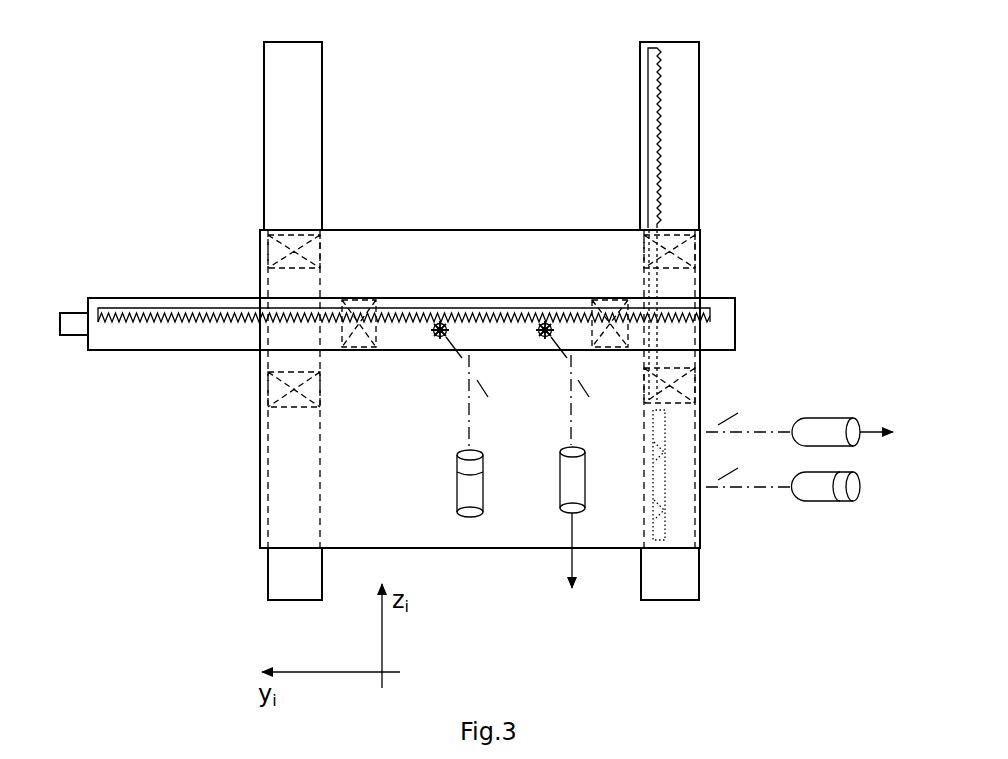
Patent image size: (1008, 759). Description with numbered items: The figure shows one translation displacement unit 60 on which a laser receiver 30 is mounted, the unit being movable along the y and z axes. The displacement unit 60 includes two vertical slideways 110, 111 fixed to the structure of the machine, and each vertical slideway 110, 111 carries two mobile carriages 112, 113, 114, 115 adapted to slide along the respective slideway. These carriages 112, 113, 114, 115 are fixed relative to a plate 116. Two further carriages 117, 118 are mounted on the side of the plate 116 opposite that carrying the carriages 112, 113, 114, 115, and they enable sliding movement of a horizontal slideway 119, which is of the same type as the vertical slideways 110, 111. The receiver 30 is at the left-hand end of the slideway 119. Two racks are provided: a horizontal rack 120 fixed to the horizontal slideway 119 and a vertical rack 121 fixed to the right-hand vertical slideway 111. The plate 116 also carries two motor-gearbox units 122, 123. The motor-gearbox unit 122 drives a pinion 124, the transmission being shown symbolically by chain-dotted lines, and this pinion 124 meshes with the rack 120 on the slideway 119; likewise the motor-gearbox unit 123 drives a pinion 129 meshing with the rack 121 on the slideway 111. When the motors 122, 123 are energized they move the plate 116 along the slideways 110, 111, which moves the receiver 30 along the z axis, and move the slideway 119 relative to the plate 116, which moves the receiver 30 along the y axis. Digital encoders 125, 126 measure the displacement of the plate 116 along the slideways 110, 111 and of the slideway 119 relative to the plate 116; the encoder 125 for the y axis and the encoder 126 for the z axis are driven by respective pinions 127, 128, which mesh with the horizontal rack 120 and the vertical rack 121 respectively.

The displacement unit 60 is at (512, 58).
The vertical slideway 110 is at (324, 92).
The vertical slideway 111 is at (701, 93).
The mobile carriage 112 is at (324, 250).
The mobile carriage 113 is at (324, 382).
The mobile carriage 114 is at (640, 252).
The mobile carriage 115 is at (702, 380).
The plate 116 is at (472, 254).
The carriage 117 is at (380, 322).
The carriage 118 is at (590, 304).
The horizontal slideway 119 is at (158, 353).
The horizontal rack 120 is at (155, 308).
The vertical rack 121 is at (640, 120).
The motor-gearbox unit 122 is at (470, 490).
The motor-gearbox unit 123 is at (835, 495).
The pinion 124 is at (463, 304).
The digital encoder 125 is at (565, 470).
The digital encoder 126 is at (820, 432).
The pinion 127 is at (540, 337).
The pinion 128 is at (672, 458).
The pinion 129 is at (672, 520).
The laser receiver 30 is at (75, 339).